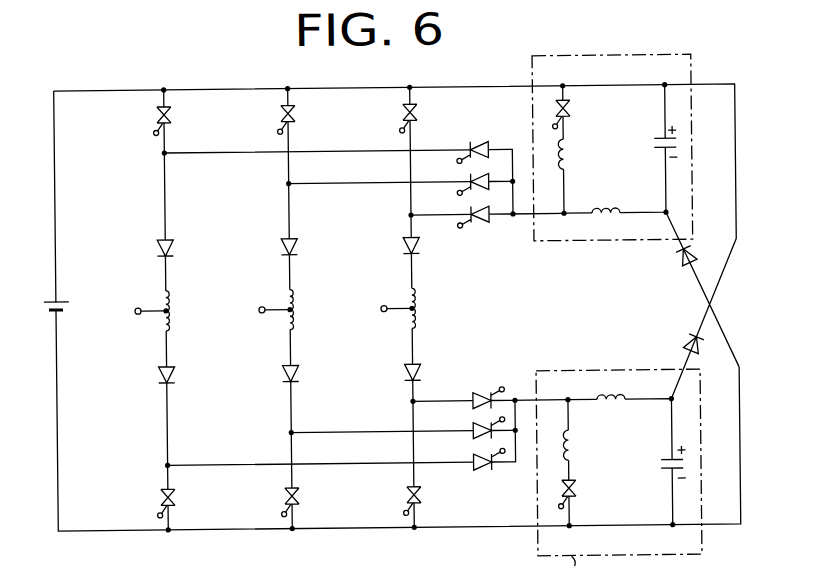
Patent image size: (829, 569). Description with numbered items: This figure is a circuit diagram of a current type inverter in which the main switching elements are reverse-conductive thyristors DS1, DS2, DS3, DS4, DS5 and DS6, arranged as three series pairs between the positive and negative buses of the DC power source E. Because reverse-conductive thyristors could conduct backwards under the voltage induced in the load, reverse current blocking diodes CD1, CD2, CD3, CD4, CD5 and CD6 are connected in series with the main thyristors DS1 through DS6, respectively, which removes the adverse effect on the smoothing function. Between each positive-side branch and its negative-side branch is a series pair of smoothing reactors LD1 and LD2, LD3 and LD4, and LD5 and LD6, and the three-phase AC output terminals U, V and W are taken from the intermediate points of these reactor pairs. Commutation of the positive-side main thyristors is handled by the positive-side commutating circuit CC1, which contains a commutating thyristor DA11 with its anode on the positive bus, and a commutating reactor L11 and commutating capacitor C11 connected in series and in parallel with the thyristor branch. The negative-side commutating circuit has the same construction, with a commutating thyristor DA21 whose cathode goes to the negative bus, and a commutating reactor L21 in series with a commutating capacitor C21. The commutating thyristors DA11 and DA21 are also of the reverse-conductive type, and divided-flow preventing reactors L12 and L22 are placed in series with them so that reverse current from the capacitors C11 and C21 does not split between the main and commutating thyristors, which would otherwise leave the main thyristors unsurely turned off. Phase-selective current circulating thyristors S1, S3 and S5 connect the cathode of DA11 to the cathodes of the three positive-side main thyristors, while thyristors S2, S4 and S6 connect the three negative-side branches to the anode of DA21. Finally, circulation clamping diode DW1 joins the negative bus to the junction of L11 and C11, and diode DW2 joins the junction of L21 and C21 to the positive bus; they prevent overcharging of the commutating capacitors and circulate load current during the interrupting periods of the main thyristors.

The reverse-conductive main thyristor DS1 is at (158, 111).
The reverse-conductive main thyristor DS2 is at (159, 494).
The reverse-conductive main thyristor DS3 is at (281, 112).
The reverse-conductive main thyristor DS4 is at (283, 495).
The reverse-conductive main thyristor DS5 is at (404, 112).
The reverse-conductive main thyristor DS6 is at (405, 494).
The reverse current blocking diode CD1 is at (160, 243).
The reverse current blocking diode CD2 is at (158, 374).
The reverse current blocking diode CD3 is at (282, 244).
The reverse current blocking diode CD4 is at (282, 375).
The reverse current blocking diode CD5 is at (404, 245).
The reverse current blocking diode CD6 is at (404, 375).
The smoothing reactor LD1 is at (175, 300).
The smoothing reactor LD2 is at (175, 327).
The smoothing reactor LD3 is at (299, 300).
The smoothing reactor LD4 is at (299, 327).
The smoothing reactor LD5 is at (421, 300).
The smoothing reactor LD6 is at (421, 327).
The current circulating thyristor S1 is at (472, 150).
The current circulating thyristor S2 is at (487, 456).
The current circulating thyristor S3 is at (472, 182).
The current circulating thyristor S4 is at (487, 426).
The current circulating thyristor S5 is at (472, 215).
The current circulating thyristor S6 is at (487, 396).
The DC power source E is at (66, 303).
The AC output terminal U is at (142, 309).
The AC output terminal V is at (266, 309).
The AC output terminal W is at (386, 309).
The positive-side commutating circuit CC1 is at (622, 53).
The reverse-conductive commutating thyristor DA11 is at (574, 107).
The commutating capacitor C11 is at (652, 144).
The divided flow preventing reactor L12 is at (574, 164).
The commutating reactor L11 is at (604, 206).
The circulation clamping diode DW1 is at (671, 268).
The circulation clamping diode DW2 is at (678, 340).
The commutating reactor L21 is at (607, 411).
The divided flow preventing reactor L22 is at (577, 445).
The commutating capacitor C21 is at (657, 470).
The reverse-conductive commutating thyristor DA21 is at (575, 490).